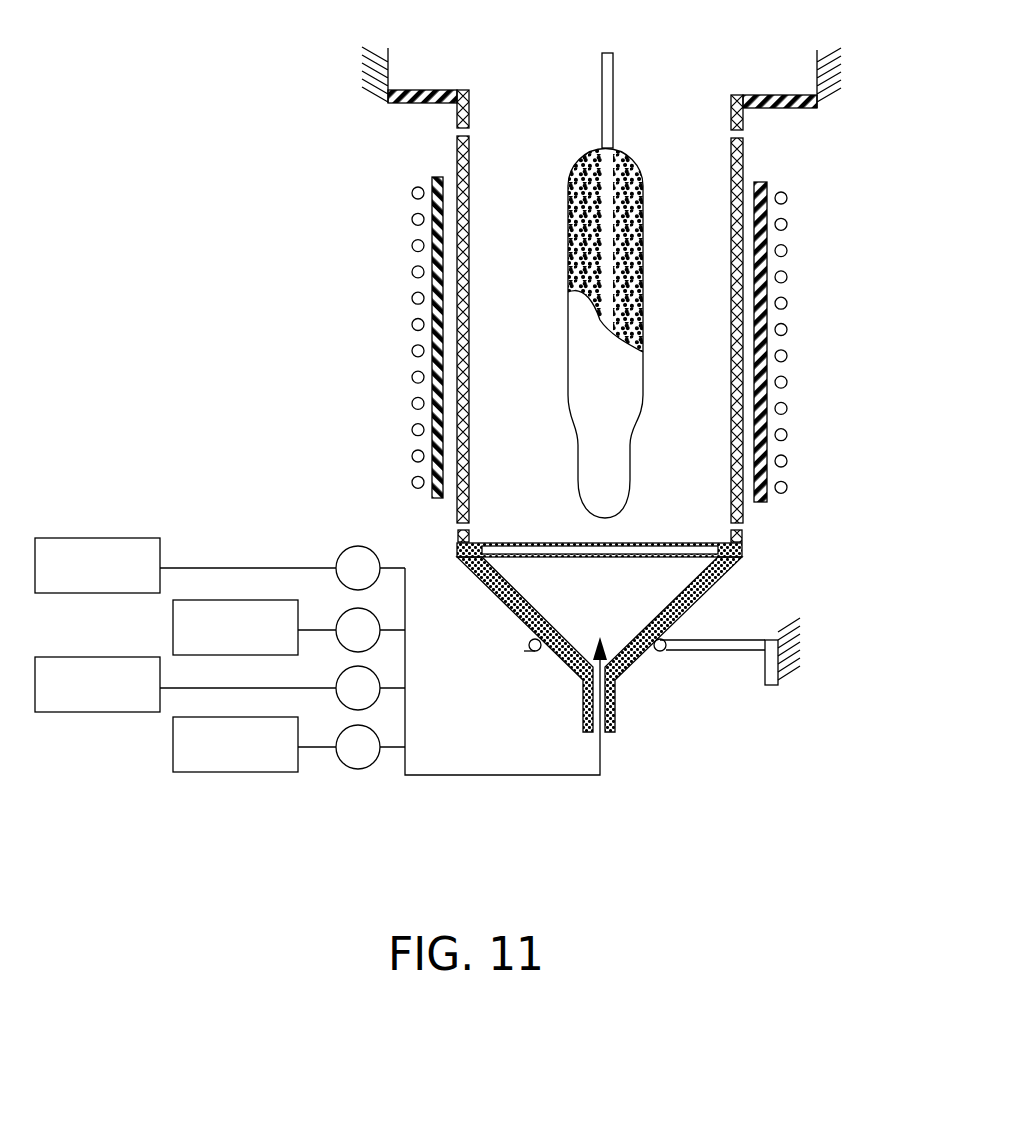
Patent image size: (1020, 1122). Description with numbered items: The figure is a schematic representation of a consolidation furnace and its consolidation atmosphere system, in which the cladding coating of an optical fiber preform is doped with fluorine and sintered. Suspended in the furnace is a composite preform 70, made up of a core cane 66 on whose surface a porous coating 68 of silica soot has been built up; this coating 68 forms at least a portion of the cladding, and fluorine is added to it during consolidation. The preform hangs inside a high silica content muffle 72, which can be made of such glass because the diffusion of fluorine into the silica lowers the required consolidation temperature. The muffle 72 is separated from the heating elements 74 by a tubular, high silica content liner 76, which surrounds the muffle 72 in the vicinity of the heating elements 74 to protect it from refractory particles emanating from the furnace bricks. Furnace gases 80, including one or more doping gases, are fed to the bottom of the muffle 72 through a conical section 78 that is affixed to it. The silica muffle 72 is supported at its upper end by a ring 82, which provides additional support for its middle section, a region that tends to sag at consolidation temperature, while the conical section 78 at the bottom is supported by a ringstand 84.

The core cane 66 is at (602, 125).
The porous coating 68 is at (643, 212).
The composite preform 70 is at (536, 246).
The muffle 72 is at (456, 160).
The heating elements 74 is at (788, 332).
The liner 76 is at (768, 238).
The conical section 78 is at (700, 606).
The furnace gases 80 is at (458, 776).
The ring 82 is at (425, 92).
The ringstand 84 is at (664, 672).